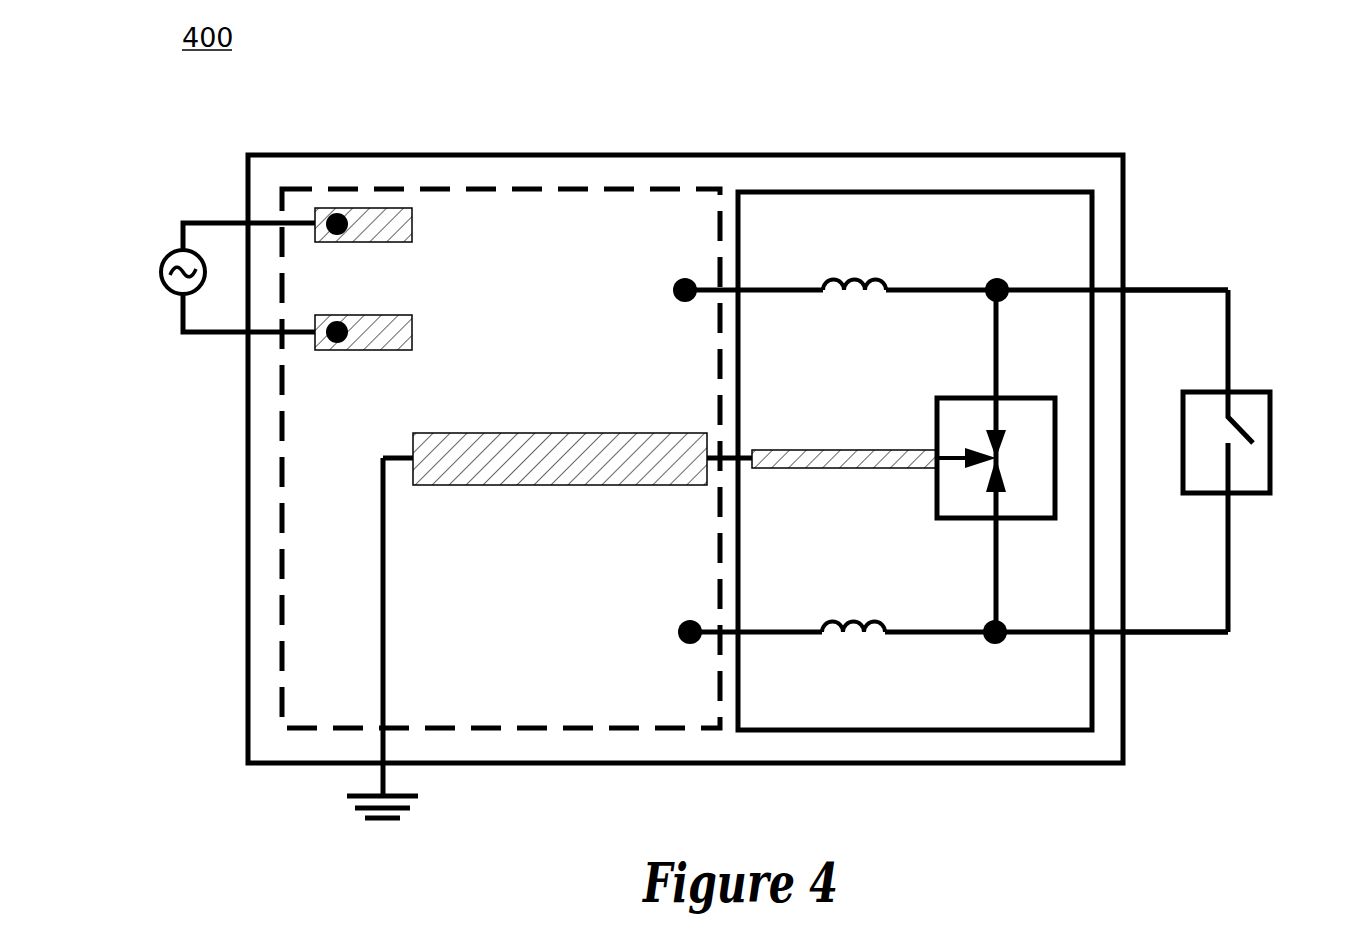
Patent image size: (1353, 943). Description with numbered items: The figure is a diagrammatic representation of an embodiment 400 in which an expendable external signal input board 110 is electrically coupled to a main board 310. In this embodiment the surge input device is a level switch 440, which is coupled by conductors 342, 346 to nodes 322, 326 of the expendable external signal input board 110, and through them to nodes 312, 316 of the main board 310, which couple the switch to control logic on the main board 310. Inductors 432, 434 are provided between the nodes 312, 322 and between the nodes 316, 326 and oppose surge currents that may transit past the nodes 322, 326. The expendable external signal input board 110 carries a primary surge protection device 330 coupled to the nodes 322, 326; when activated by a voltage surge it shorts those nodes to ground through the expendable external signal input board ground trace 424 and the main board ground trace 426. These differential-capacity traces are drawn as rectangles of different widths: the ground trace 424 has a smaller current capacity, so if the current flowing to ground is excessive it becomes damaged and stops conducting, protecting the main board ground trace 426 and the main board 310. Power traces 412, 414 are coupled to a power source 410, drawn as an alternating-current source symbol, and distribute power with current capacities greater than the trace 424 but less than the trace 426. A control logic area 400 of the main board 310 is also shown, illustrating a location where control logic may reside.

The control logic area 400 is at (557, 189).
The main board 310 is at (415, 155).
The expendable external signal input board 110 is at (880, 192).
The AC power source 410 is at (180, 249).
The power trace 412 is at (412, 225).
The power trace 414 is at (412, 330).
The main board ground trace 426 is at (467, 433).
The expendable external signal input board ground trace 424 is at (868, 450).
The primary surge protection device 330 is at (1038, 398).
The node 312 is at (685, 280).
The node 316 is at (688, 644).
The inductor 432 is at (830, 273).
The inductor 434 is at (828, 616).
The node 322 is at (997, 280).
The node 326 is at (993, 645).
The conductor 342 is at (1148, 288).
The conductor 346 is at (1180, 645).
The level switch 440 is at (1246, 392).